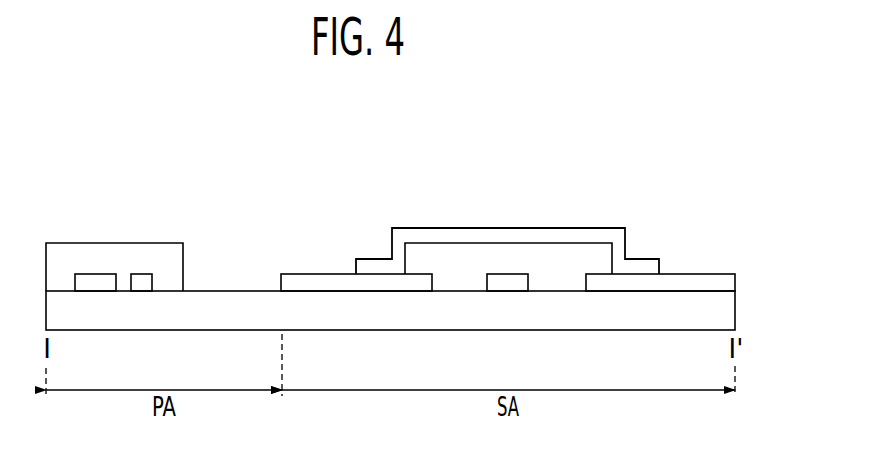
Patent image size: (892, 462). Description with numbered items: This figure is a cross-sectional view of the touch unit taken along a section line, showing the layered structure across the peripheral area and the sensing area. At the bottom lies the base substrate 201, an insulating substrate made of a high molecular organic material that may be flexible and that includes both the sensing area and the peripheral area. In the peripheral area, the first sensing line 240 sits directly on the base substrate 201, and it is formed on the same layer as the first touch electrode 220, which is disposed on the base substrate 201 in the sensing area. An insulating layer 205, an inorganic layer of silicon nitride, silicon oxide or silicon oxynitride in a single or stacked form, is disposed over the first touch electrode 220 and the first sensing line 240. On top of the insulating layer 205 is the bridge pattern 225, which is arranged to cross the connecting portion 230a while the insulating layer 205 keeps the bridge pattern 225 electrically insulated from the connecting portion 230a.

The base substrate 201 is at (736, 312).
The insulating layer 205 is at (114, 249).
The first touch electrode 220 is at (329, 283).
The bridge pattern 225 is at (507, 235).
The connecting portion 230a is at (515, 283).
The first sensing line 240 is at (95, 283).